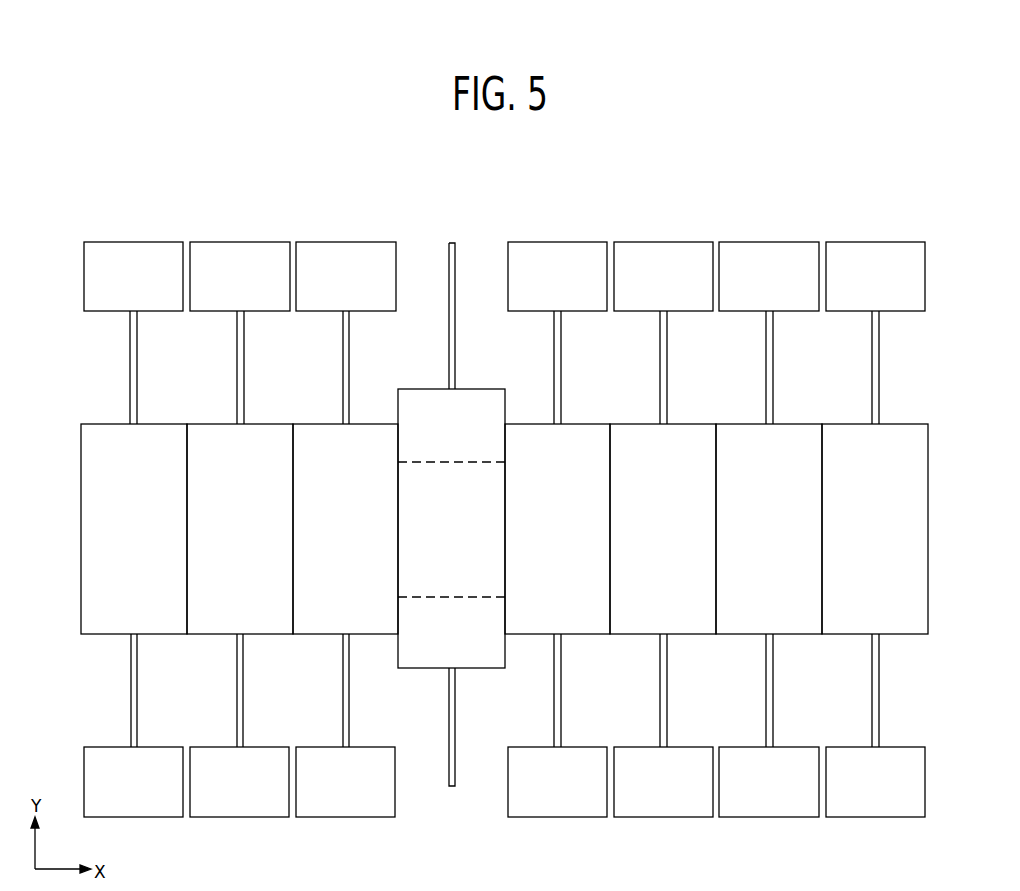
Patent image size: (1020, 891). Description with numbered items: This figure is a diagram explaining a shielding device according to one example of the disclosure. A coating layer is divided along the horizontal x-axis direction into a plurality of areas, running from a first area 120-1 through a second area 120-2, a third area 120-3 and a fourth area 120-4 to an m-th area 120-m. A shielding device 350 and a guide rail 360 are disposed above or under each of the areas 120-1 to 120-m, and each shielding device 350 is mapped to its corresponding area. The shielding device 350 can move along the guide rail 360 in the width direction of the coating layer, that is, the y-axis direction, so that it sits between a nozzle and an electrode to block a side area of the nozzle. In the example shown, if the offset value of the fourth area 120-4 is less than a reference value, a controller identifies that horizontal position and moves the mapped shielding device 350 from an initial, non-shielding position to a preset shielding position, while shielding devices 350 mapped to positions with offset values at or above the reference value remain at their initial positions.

The first area 120-1 is at (104, 423).
The second area 120-2 is at (211, 423).
The third area 120-3 is at (317, 423).
The fourth area 120-4 is at (422, 422).
The m-th area 120-m is at (908, 423).
The shielding device 350 is at (490, 389).
The guide rail 360 is at (450, 787).